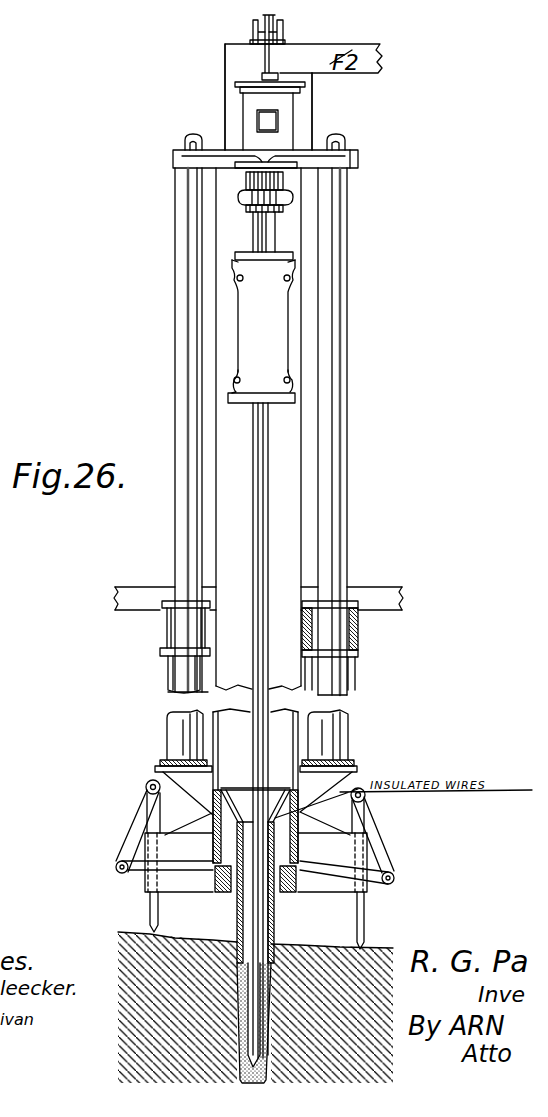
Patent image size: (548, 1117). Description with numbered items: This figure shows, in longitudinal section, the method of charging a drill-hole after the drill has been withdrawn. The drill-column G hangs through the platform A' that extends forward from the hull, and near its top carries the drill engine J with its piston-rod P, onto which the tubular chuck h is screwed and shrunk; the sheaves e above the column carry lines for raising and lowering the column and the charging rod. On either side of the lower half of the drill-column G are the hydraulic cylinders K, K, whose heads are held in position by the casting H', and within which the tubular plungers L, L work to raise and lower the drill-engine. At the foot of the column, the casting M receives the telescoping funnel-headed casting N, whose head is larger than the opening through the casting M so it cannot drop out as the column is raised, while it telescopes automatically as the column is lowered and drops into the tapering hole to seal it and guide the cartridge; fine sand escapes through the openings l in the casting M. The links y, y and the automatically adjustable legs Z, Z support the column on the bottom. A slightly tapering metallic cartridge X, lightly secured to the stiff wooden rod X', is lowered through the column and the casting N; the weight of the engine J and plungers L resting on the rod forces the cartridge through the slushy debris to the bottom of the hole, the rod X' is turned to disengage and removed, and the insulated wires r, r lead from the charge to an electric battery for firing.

The sheaves e is at (273, 47).
The drill-column G is at (225, 107).
The drill engine J is at (285, 117).
The piston-rod P is at (270, 230).
The tubular chuck h is at (261, 327).
The plungers L is at (175, 375).
The wooden rod X' is at (331, 730).
The platform A' is at (258, 584).
The casting H' is at (258, 647).
The hydraulic cylinders K is at (177, 742).
The insulated wires r is at (245, 790).
The links y is at (132, 833).
The openings l is at (213, 877).
The telescoping casting N is at (235, 917).
The casting M is at (332, 880).
The automatically adjustable legs Z is at (150, 907).
The metallic cartridge X is at (241, 1023).